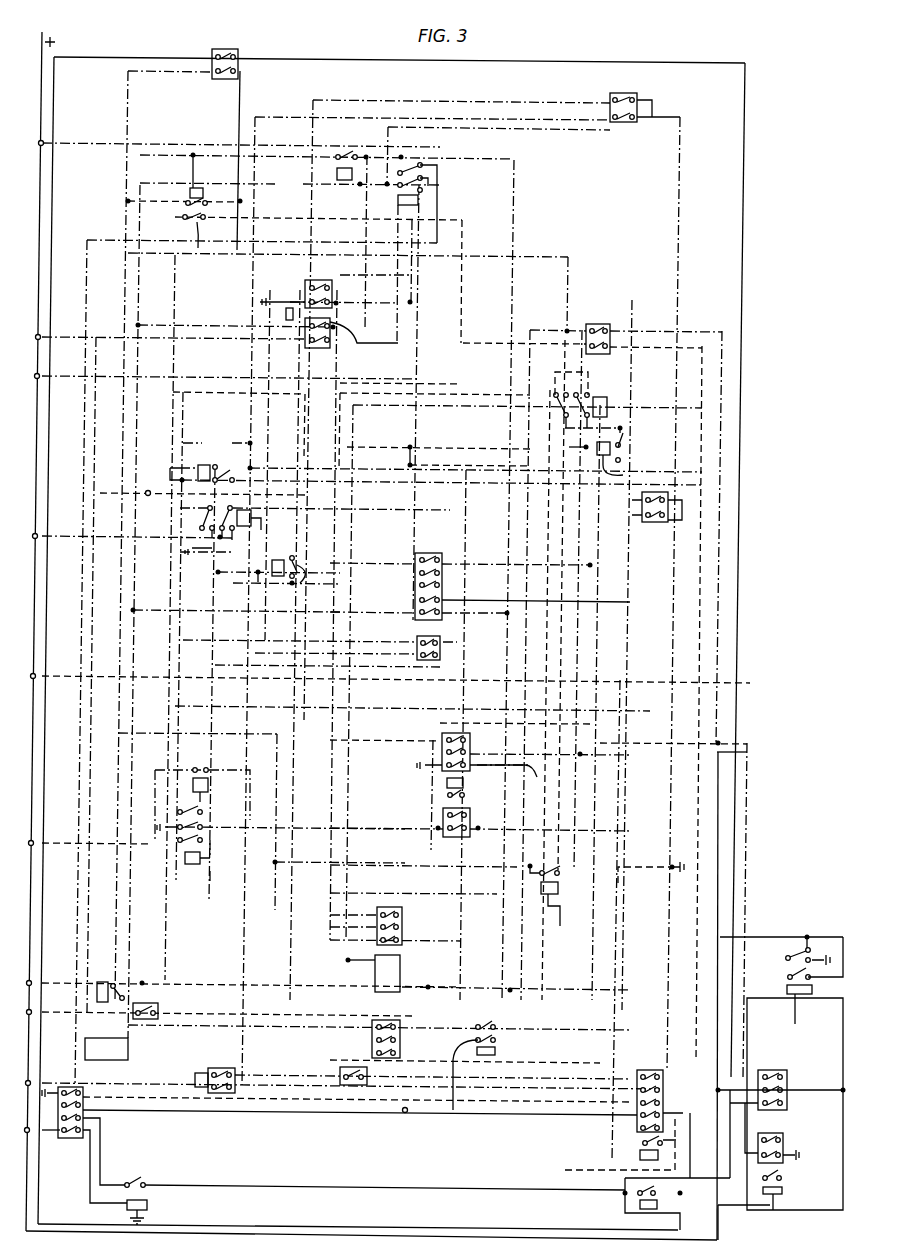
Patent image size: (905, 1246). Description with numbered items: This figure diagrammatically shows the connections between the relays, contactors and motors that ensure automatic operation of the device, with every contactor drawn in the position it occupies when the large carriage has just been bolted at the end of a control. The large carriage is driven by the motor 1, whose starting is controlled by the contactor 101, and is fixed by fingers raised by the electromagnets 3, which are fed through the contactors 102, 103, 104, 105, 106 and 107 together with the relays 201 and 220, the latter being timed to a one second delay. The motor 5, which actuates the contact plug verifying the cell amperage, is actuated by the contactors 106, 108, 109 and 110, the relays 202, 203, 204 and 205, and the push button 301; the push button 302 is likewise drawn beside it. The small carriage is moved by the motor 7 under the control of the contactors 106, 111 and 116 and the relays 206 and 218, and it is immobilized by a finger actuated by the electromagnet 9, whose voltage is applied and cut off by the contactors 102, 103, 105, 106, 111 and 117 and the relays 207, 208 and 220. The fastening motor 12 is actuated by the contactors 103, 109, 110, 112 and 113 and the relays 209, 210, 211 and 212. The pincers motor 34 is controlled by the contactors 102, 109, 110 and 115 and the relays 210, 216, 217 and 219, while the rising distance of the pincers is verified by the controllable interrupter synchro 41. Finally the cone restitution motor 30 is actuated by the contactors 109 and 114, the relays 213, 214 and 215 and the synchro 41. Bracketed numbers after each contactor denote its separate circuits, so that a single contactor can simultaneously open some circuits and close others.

The push button 301 is at (238, 38).
The switch contact 302 is at (220, 80).
The controllable interrupter synchro 41 is at (625, 92).
The relay 220 is at (188, 201).
The motor 34 is at (289, 183).
The relay 217 is at (336, 156).
The relay 219 is at (418, 200).
The contactor 102 is at (309, 293).
The relay 216 is at (322, 310).
The contactor 115 is at (288, 362).
The contactor 105 is at (618, 363).
The relay 212 is at (607, 398).
The motor 12 is at (563, 447).
The relay 211 is at (628, 475).
The contactor 107 is at (655, 490).
The motor 30 is at (217, 443).
The relay 213 is at (222, 474).
The relay 215 is at (240, 530).
The relay 214 is at (300, 583).
The contactor 109 is at (420, 612).
The contactor 114 is at (462, 664).
The contactor 103 is at (442, 752).
The relay 209 is at (463, 783).
The contactor 112 is at (453, 850).
The relay 207 is at (560, 887).
The motor 1 is at (644, 886).
The relay 206 is at (208, 785).
The relay 218 is at (185, 862).
The motor 7 is at (210, 889).
The contactor 116 is at (430, 927).
The electromagnet 9 is at (374, 973).
The relay 201 is at (102, 980).
The contactor 101 is at (152, 1003).
The electromagnet 3 is at (106, 1049).
The contactor 110 is at (66, 1152).
The contactor 111 is at (238, 1128).
The contactor 113 is at (382, 1122).
The contactor 117 is at (355, 1088).
The relay 205 is at (135, 1170).
The relay 210 is at (455, 1058).
The contactor 106 is at (680, 1147).
The relay 208 is at (640, 1148).
The relay 204 is at (636, 1204).
The relay 203 is at (787, 989).
The motor 5 is at (795, 1104).
The contactor 104 is at (808, 1135).
The contactor 108 is at (808, 1180).
The relay 202 is at (763, 1190).